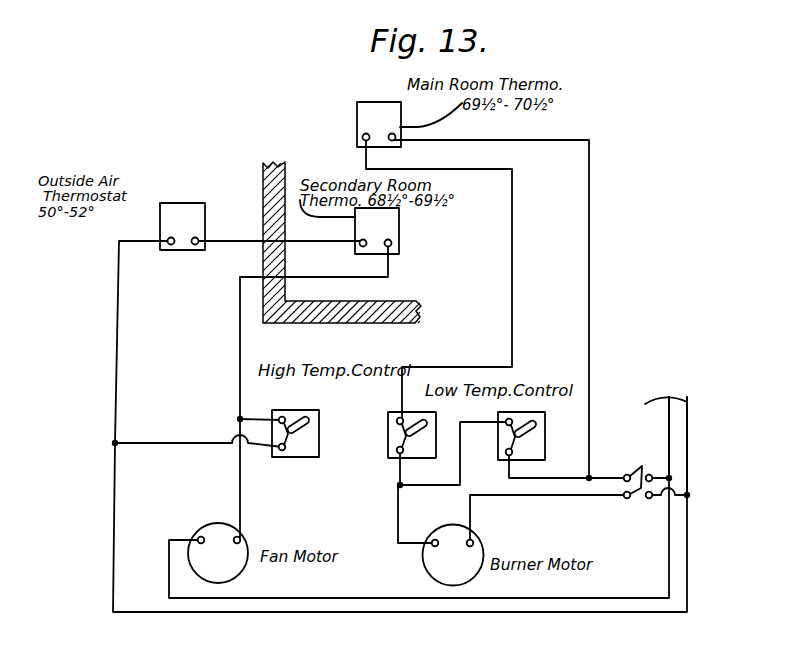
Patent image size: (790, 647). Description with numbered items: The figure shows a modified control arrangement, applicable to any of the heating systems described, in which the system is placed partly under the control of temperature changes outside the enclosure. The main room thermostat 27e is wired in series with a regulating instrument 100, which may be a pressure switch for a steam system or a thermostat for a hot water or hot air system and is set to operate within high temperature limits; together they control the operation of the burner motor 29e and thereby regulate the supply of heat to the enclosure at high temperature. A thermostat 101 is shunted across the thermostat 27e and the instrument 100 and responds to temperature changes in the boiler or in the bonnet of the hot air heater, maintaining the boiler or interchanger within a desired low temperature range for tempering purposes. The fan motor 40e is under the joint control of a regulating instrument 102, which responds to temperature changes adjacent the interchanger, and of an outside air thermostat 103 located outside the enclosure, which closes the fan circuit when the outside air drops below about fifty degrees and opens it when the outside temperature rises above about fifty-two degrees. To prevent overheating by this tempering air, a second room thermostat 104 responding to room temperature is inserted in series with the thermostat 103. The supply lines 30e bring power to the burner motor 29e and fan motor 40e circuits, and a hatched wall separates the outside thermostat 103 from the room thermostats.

The main room thermostat 27e is at (411, 107).
The outside air thermostat 103 is at (183, 203).
The second room thermostat 104 is at (406, 224).
The regulating instrument 102 is at (292, 457).
The regulating instrument 100 is at (388, 418).
The thermostat 101 is at (545, 412).
The power supply lines 30e is at (669, 411).
The fan motor 40e is at (218, 553).
The burner motor 29e is at (489, 557).